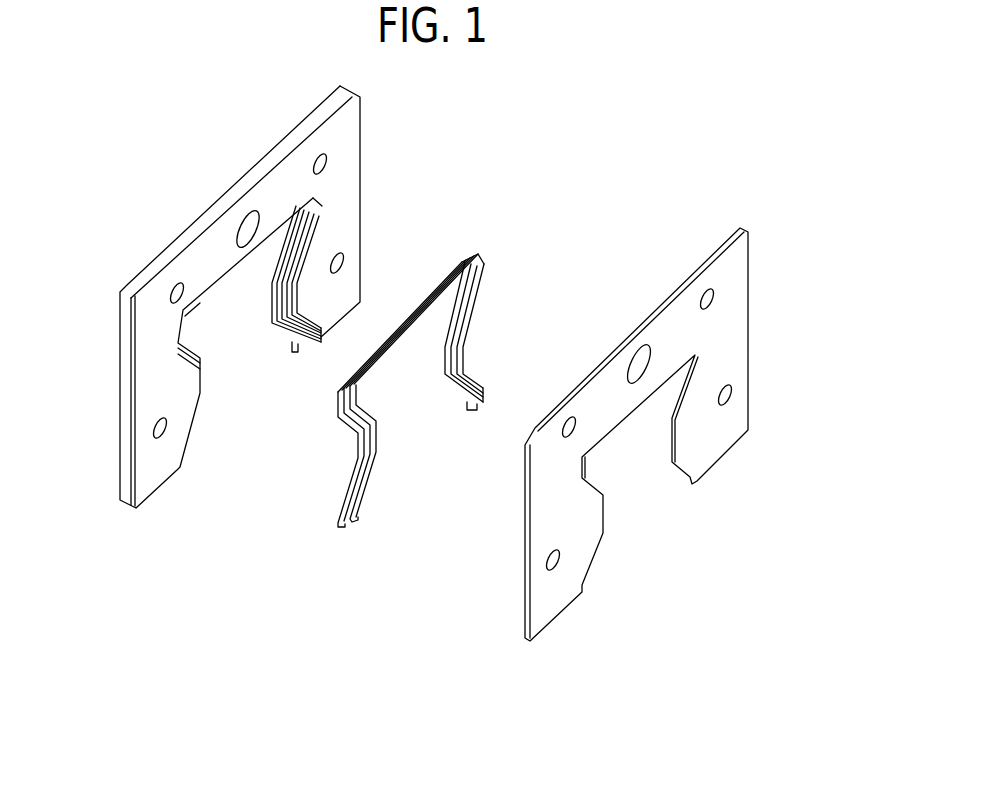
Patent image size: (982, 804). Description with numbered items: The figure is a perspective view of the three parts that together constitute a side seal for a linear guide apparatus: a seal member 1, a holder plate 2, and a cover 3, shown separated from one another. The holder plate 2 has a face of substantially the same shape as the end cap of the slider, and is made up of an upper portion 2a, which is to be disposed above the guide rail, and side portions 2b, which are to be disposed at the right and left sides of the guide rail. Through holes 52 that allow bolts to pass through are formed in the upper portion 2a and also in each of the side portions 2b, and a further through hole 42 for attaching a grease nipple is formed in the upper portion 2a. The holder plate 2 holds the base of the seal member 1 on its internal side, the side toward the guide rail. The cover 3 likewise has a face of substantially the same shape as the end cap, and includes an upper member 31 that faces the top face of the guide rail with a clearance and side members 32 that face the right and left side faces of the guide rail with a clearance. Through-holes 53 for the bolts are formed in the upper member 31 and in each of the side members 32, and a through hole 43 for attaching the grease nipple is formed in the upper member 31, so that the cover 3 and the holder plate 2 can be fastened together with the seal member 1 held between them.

The seal member 1 is at (332, 538).
The holder plate 2 is at (160, 495).
The upper portion 2a is at (203, 262).
The side portions 2b is at (343, 217).
The cover 3 is at (565, 617).
The upper member 31 is at (603, 397).
The side members 32 is at (720, 348).
The through hole 42 is at (252, 222).
The through hole 43 is at (640, 348).
The through holes 52 is at (180, 288).
The through-holes 53 is at (572, 423).